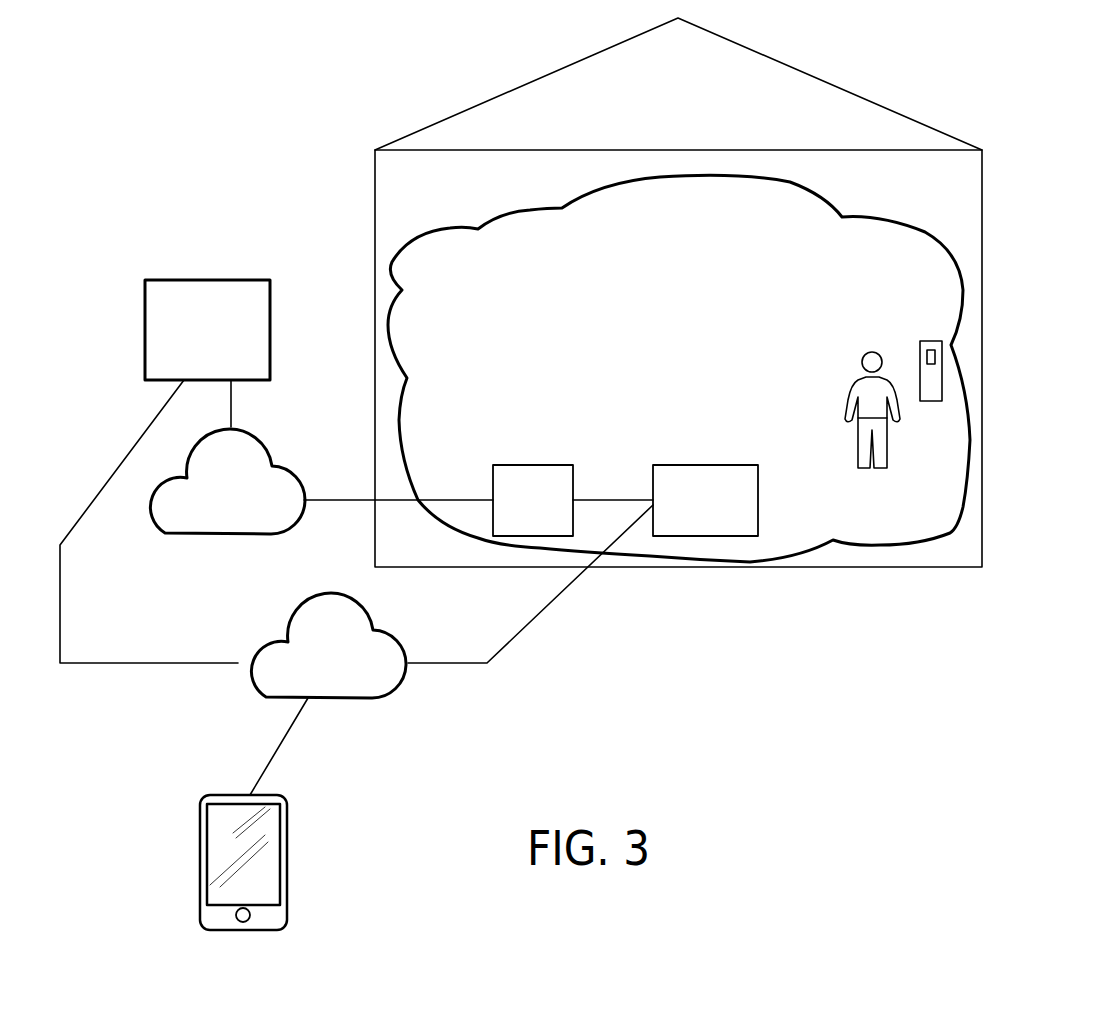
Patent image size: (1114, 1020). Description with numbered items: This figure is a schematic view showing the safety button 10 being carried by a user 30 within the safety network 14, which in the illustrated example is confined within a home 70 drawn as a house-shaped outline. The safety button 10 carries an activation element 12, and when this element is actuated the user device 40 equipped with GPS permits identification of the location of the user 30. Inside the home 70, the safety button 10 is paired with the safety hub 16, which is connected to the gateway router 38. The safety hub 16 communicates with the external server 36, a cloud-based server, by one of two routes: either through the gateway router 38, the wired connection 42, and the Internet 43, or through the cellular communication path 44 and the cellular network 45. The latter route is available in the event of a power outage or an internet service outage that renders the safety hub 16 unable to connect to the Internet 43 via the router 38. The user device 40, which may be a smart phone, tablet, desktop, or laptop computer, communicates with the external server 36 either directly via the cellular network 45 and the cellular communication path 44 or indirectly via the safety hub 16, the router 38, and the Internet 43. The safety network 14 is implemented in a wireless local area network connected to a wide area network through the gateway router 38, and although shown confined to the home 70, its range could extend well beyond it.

The home 70 is at (853, 97).
The safety network 14 is at (925, 232).
The user 30 is at (866, 351).
The safety button 10 is at (944, 382).
The activation element 12 is at (935, 357).
The external server 36 is at (225, 349).
The Internet 43 is at (207, 505).
The cellular network 45 is at (310, 672).
The cellular communication path 44 is at (340, 497).
The gateway router 38 is at (553, 514).
The wired connection 42 is at (604, 497).
The safety hub 16 is at (688, 514).
The user device 40 is at (290, 855).